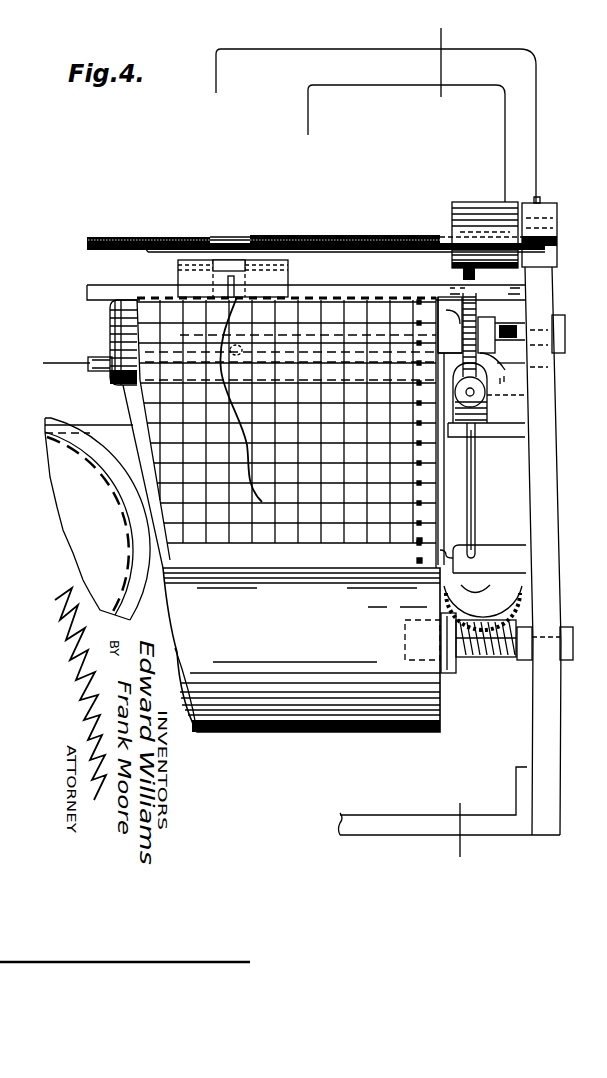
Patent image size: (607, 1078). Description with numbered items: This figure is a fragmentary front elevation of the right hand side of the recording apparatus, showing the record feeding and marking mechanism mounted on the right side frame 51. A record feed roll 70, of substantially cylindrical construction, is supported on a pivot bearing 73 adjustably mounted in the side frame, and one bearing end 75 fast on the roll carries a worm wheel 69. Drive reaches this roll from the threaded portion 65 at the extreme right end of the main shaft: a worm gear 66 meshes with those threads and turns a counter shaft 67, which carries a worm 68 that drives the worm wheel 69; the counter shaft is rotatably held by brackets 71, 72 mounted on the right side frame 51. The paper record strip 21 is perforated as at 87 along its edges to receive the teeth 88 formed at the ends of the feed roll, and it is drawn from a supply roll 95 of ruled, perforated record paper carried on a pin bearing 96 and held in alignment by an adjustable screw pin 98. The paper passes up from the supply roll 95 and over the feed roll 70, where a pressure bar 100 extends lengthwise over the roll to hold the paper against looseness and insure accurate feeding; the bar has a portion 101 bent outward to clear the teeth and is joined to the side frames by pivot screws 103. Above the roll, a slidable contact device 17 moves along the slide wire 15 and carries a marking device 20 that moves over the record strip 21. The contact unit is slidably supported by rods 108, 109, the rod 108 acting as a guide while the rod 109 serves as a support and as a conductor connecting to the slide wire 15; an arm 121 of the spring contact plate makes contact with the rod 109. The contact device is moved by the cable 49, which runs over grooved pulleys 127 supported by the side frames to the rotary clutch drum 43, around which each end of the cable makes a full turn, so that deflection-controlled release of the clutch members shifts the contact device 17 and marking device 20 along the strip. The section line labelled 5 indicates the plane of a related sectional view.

The section line 5- 5 is at (470, 25).
The slide wire 15 is at (123, 235).
The arm of contact plate 121 is at (258, 228).
The rod 109 is at (152, 252).
The slidable contact device 17 is at (176, 275).
The marking device 20 is at (238, 281).
The pressure bar 100 is at (355, 262).
The teeth of feed roll 88 is at (417, 296).
The outwardly bent portion of pressure bar 101 is at (485, 290).
The pivot screws 103 is at (550, 290).
The record feed roll 70 is at (112, 331).
The rod 108 is at (90, 358).
The cable 49 is at (66, 363).
The rotary clutch drum 43 is at (108, 438).
The worm wheel 69 is at (450, 325).
The bearing end 75 is at (480, 318).
The pivot bearing 73 is at (510, 325).
The grooved pulleys 127 is at (540, 367).
The worm 68 is at (490, 423).
The bracket 72 is at (501, 427).
The record strip 21 is at (440, 460).
The perforations 87 is at (422, 513).
The counter shaft 67 is at (479, 506).
The bracket 71 is at (492, 547).
The worm gear 66 is at (515, 601).
The pin bearing 96 is at (428, 640).
The threaded portion of main shaft 65 is at (477, 660).
The adjustable screw pin 98 is at (505, 660).
The supply roll 95 is at (420, 730).
The right side frame 51 is at (555, 730).